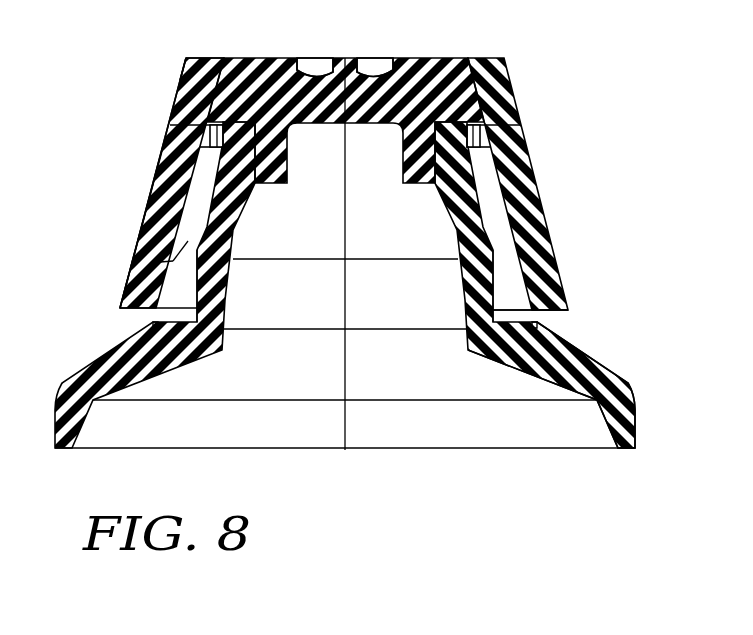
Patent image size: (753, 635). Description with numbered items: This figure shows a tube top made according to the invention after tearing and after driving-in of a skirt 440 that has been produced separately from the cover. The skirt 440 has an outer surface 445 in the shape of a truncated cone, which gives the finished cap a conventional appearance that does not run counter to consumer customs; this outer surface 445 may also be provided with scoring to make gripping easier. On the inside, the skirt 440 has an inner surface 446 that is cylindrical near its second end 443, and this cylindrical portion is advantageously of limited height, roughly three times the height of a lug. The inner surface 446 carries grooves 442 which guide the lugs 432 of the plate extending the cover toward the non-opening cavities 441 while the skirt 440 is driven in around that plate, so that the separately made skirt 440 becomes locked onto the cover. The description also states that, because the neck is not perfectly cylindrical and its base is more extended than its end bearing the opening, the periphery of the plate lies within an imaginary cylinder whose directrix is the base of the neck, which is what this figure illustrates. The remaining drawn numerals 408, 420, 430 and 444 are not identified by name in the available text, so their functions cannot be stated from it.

The flange 408 is at (403, 376).
The vent opening 420 is at (304, 61).
The liner insert 430 is at (376, 317).
The lugs 432 is at (376, 317).
The skirt 440 is at (376, 317).
The non-opening cavities 441 is at (133, 180).
The grooves 442 is at (301, 127).
The second end 443 is at (152, 46).
The ledge 444 is at (582, 285).
The outer surface 445 is at (89, 214).
The inner surface 446 is at (119, 281).